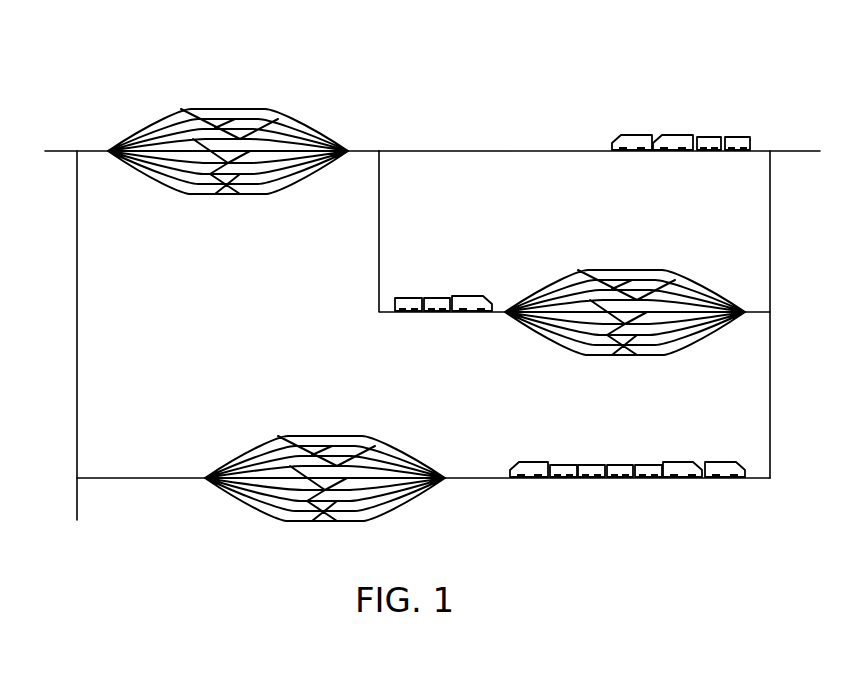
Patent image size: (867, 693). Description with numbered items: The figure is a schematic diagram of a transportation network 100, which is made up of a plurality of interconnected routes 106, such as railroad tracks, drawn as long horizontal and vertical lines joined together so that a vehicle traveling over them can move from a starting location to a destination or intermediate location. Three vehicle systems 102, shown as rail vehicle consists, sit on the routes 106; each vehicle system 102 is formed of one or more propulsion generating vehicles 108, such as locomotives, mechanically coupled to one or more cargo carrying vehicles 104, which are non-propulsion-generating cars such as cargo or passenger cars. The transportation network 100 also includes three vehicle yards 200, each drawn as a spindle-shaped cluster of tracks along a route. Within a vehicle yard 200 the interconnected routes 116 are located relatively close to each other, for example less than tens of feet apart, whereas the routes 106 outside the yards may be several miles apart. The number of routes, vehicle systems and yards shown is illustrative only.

The transportation network 100 is at (119, 69).
The vehicle system 102 is at (752, 157).
The cargo carrying vehicle 104 is at (740, 135).
The route 106 is at (535, 153).
The propulsion generating vehicle 108 is at (636, 133).
The route 116 is at (251, 130).
The vehicle yard 200 is at (273, 86).